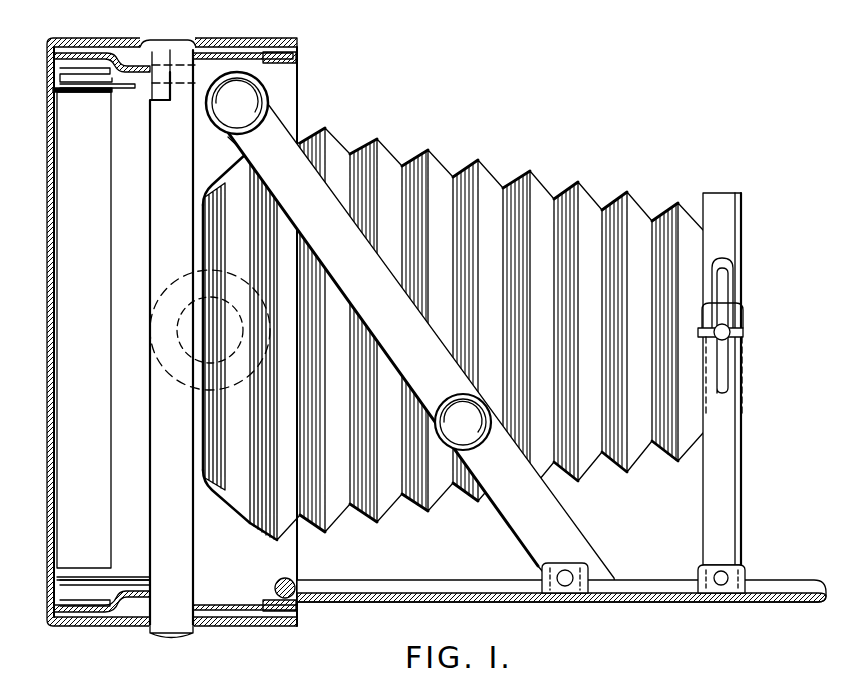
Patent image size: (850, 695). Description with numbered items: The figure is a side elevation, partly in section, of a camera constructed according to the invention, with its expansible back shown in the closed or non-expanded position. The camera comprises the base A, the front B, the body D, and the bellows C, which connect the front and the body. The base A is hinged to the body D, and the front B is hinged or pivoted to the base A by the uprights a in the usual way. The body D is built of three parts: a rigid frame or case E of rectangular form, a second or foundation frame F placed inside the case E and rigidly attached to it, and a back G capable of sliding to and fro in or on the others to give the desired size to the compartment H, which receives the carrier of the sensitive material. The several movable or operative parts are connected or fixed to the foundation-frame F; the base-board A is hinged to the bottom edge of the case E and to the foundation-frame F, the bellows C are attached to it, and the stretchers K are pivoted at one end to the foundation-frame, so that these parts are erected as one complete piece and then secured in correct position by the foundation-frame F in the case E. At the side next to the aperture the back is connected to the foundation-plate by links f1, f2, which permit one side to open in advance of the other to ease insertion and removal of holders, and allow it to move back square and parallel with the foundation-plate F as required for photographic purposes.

The base A is at (561, 576).
The front B is at (731, 393).
The bellows C is at (426, 334).
The body D is at (192, 334).
The rigid frame or case E is at (278, 331).
The foundation-frame F is at (169, 337).
The back G is at (161, 332).
The compartment H is at (101, 334).
The stretchers K is at (410, 331).
The uprights a is at (718, 405).
The link f1 is at (86, 338).
The link f2 is at (105, 334).